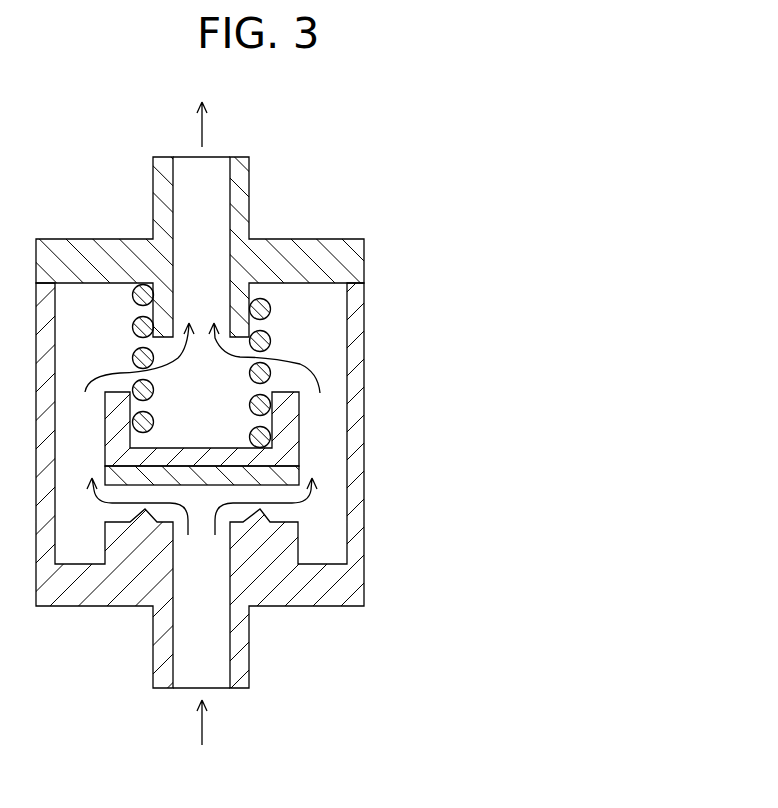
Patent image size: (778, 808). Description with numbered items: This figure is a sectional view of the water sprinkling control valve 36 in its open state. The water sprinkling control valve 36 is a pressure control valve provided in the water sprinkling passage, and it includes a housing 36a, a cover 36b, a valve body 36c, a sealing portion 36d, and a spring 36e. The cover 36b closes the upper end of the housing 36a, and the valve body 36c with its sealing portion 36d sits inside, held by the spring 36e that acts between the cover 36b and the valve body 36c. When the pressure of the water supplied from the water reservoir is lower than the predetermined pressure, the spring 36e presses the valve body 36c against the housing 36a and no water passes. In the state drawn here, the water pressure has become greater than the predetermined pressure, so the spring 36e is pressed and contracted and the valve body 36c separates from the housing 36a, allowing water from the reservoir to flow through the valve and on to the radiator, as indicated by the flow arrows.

The water sprinkling control valve 36 is at (389, 404).
The housing 36a is at (365, 545).
The cover 36b is at (328, 238).
The valve body 36c is at (289, 428).
The sealing portion 36d is at (299, 468).
The spring 36e is at (270, 340).